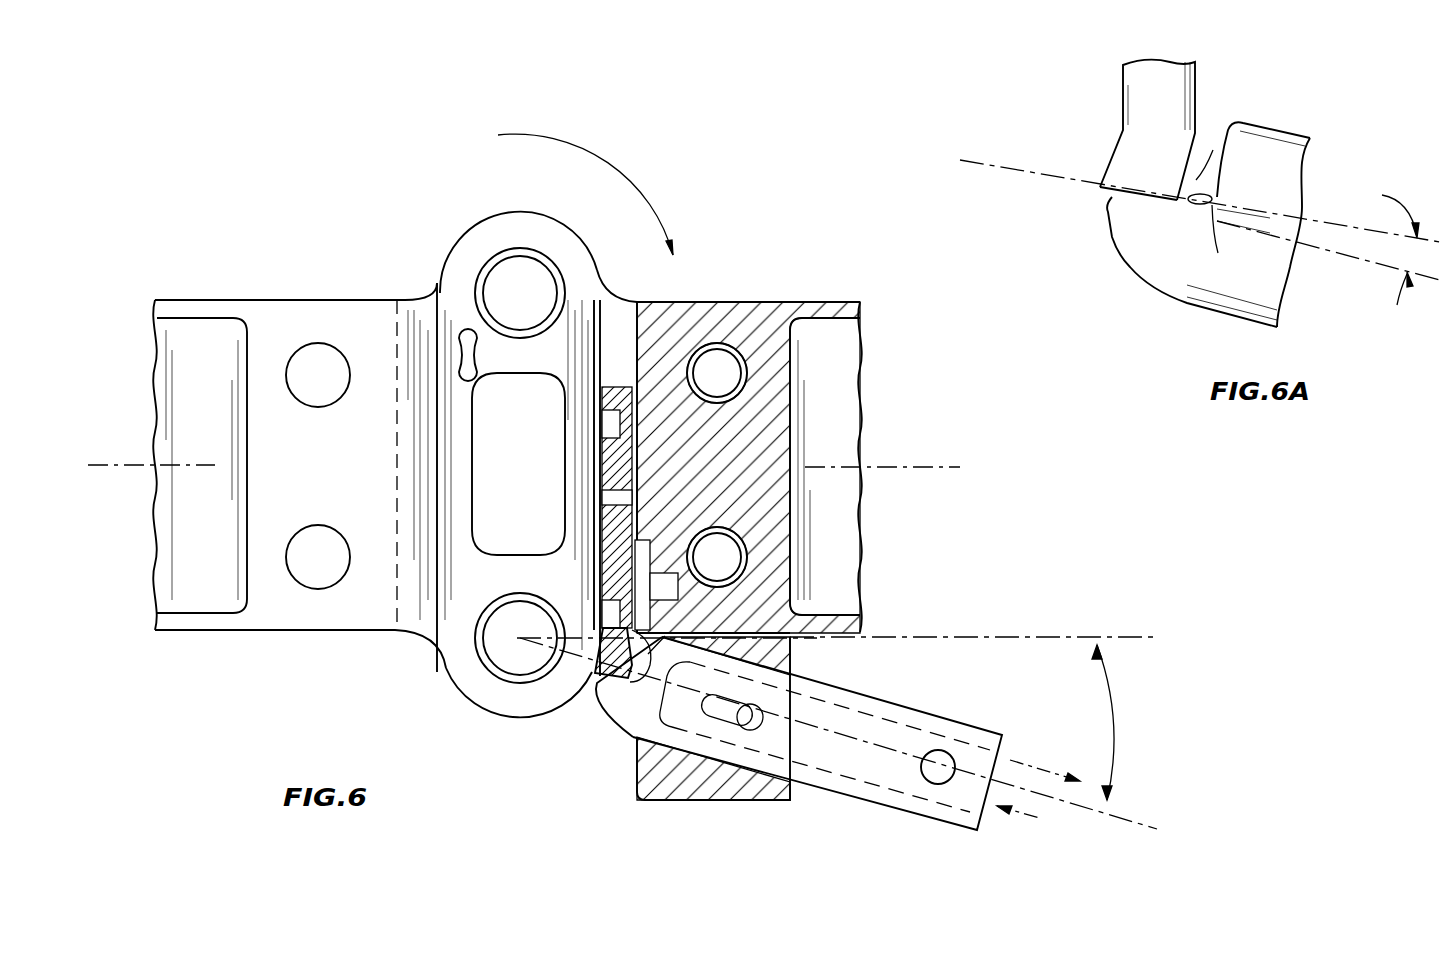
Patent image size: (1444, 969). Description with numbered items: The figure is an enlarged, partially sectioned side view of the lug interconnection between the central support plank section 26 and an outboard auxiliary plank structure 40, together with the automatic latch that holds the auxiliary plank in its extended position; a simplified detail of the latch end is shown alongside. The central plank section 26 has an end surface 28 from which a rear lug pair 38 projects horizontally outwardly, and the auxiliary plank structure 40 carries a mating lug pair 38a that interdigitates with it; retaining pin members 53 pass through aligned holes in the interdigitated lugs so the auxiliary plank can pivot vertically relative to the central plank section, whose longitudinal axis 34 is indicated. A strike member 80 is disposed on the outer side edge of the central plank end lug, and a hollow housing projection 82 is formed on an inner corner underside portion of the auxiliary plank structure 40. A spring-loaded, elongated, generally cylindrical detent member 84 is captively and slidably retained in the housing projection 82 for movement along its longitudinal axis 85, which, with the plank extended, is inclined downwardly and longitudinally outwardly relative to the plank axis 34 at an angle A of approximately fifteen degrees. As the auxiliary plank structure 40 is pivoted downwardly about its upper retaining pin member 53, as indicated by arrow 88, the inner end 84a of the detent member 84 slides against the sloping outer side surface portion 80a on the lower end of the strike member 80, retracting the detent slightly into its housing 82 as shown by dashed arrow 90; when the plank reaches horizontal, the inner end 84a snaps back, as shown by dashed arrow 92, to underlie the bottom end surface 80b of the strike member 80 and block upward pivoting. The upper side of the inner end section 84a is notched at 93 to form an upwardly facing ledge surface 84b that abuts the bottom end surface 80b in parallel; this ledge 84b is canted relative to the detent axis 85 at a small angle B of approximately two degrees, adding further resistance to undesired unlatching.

In FIG. 6, the central support plank section 26 is at (245, 296).
In FIG. 6, the end surface 28 is at (400, 476).
In FIG. 6, the longitudinal axis 34 is at (910, 468).
In FIG. 6, the rear lug pair 38 is at (468, 345).
In FIG. 6, the rear lug pair 38a is at (512, 228).
In FIG. 6, the auxiliary plank structure 40 is at (760, 300).
In FIG. 6, the retaining pin member 53 is at (520, 272).
In FIG. 6, the strike member 80 is at (610, 469).
In FIG. 6A, the strike member 80 is at (1145, 85).
In FIG. 6, the sloping outer side surface portion 80a is at (668, 640).
In FIG. 6A, the sloping outer side surface portion 80a is at (1198, 160).
In FIG. 6, the bottom end surface 80b is at (597, 680).
In FIG. 6A, the bottom end surface 80b is at (1143, 197).
In FIG. 6, the housing projection 82 is at (735, 800).
In FIG. 6, the detent member 84 is at (883, 700).
In FIG. 6, the inner end 84a is at (610, 720).
In FIG. 6A, the inner end 84a is at (1130, 272).
In FIG. 6, the ledge surface 84b is at (637, 678).
In FIG. 6A, the ledge surface 84b is at (1212, 205).
In FIG. 6, the longitudinal axis 85 is at (1128, 820).
In FIG. 6A, the longitudinal axis 85 is at (1360, 262).
In FIG. 6, the arrow 88 is at (593, 152).
In FIG. 6, the dashed arrow 90 is at (1043, 768).
In FIG. 6, the dashed arrow 92 is at (1025, 822).
In FIG. 6A, the notch 93 is at (1203, 168).
In FIG. 6, the angle A is at (1115, 730).
In FIG. 6A, the angle B is at (1391, 237).